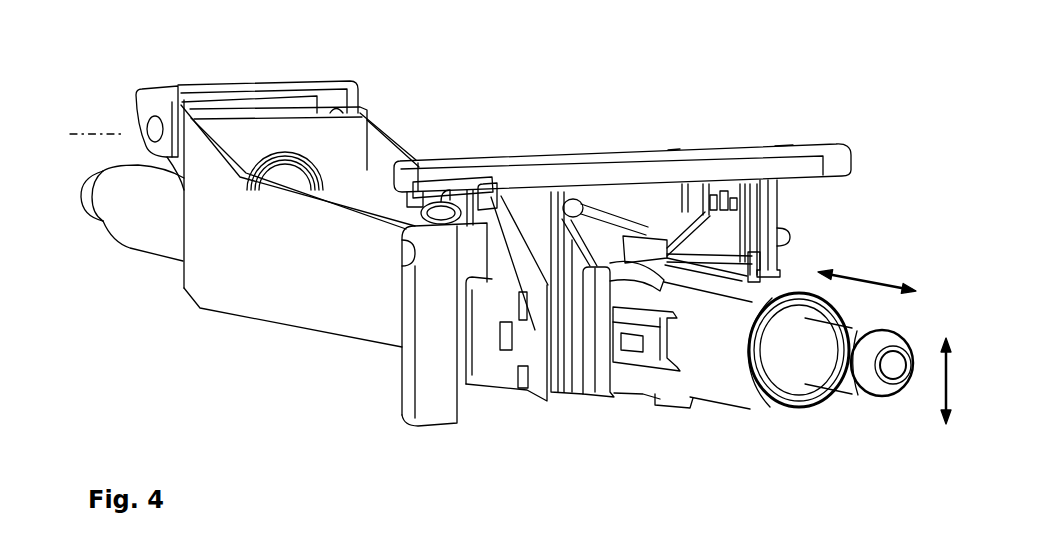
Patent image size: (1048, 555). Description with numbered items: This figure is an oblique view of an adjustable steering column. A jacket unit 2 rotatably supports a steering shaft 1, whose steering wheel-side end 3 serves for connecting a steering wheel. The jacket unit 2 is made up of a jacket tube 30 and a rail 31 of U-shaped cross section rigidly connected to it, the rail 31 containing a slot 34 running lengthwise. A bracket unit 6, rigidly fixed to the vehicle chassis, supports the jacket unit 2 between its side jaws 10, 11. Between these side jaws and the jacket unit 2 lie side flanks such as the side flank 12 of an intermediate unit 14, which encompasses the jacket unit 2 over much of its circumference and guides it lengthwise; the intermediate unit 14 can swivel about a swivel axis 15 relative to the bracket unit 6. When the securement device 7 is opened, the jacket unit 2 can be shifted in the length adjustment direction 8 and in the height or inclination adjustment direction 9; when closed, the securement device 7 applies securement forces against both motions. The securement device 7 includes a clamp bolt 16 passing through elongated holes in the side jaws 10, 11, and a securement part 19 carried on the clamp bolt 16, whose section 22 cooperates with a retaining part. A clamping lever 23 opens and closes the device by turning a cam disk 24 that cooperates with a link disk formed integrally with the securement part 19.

The steering shaft 1 is at (815, 374).
The jacket unit 2 is at (760, 405).
The steering wheel-side end 3 is at (887, 393).
The bracket unit 6 is at (783, 139).
The securement device 7 is at (338, 340).
The length adjustment direction 8 is at (862, 275).
The height or inclination adjustment direction 9 is at (978, 381).
The side jaw 10 is at (512, 333).
The side jaw 11 is at (773, 198).
The side flank 12 is at (577, 362).
The intermediate unit 14 is at (372, 345).
The swivel axis 15 is at (398, 112).
The clamp bolt 16 is at (638, 236).
The securement part 19 is at (512, 346).
The section 22 is at (524, 378).
The clamping lever 23 is at (437, 373).
The cam disk 24 is at (480, 384).
The jacket tube 30 is at (733, 397).
The rail 31 is at (650, 350).
The slot 34 is at (634, 348).